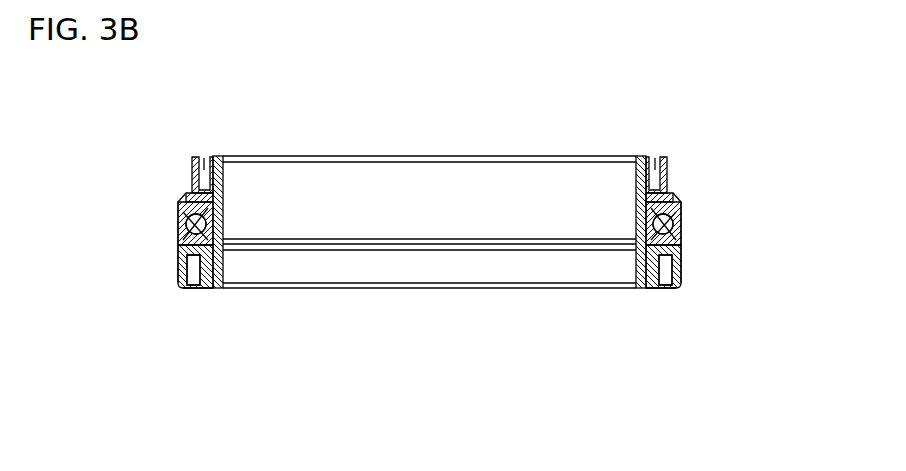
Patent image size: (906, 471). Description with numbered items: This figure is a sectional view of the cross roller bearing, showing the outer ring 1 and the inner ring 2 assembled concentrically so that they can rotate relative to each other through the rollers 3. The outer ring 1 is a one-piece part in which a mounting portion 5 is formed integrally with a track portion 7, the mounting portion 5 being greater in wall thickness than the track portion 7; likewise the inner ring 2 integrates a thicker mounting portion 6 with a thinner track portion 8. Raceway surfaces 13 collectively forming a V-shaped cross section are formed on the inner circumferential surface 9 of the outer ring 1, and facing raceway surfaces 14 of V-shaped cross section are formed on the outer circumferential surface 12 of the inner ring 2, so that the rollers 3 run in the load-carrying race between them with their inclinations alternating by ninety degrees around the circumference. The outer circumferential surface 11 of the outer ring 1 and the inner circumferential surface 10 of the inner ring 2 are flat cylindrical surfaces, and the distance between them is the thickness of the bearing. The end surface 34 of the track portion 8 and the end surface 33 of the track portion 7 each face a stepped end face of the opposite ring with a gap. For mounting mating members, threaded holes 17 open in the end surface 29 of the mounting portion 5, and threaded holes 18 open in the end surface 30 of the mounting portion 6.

The outer ring 1 is at (186, 268).
The inner ring 2 is at (190, 188).
The rollers 3 is at (212, 245).
The mounting portion 5 is at (178, 290).
The mounting portion 6 is at (197, 168).
The track portion 7 is at (180, 258).
The track portion 8 is at (215, 232).
The inner circumferential surface 9 is at (220, 290).
The inner circumferential surface 10 is at (222, 185).
The outer circumferential surface 11 is at (178, 228).
The outer circumferential surface 12 is at (675, 202).
The raceway surfaces 13 is at (203, 222).
The raceway surfaces 14 is at (180, 232).
The threaded holes 17 is at (192, 290).
The threaded holes 18 is at (215, 157).
The end surface 29 is at (203, 290).
The end surface 30 is at (205, 158).
The end surface 33 is at (183, 197).
The end surface 34 is at (213, 242).